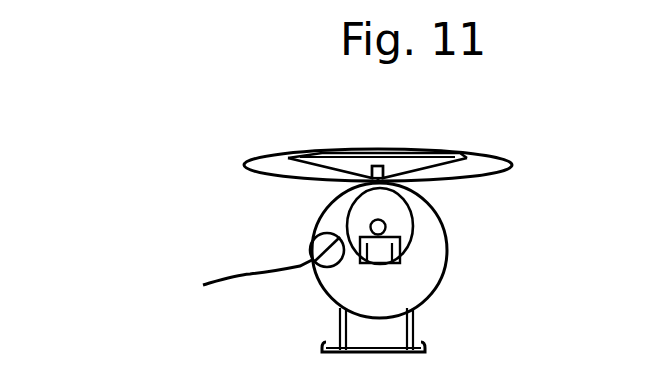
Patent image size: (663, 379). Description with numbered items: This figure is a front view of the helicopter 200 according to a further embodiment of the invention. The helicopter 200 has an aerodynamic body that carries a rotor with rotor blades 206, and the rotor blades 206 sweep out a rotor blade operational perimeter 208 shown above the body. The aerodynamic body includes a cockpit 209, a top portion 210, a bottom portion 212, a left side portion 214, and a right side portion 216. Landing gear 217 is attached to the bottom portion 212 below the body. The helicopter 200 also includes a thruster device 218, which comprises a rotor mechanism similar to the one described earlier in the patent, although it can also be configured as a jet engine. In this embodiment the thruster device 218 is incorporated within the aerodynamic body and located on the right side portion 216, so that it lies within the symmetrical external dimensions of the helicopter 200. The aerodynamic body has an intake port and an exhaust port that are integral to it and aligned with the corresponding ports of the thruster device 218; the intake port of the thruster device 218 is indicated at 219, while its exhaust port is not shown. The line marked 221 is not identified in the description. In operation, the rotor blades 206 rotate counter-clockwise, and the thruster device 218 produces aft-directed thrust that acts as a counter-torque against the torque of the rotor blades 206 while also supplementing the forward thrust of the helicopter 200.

The helicopter 200 is at (102, 150).
The rotor blades 206 is at (470, 166).
The rotor blade operational perimeter 208 is at (310, 182).
The cockpit 209 is at (412, 232).
The top portion 210 is at (428, 202).
The bottom portion 212 is at (340, 327).
The left side portion 214 is at (442, 282).
The right side portion 216 is at (318, 275).
The landing gear 217 is at (410, 330).
The thruster device 218 is at (320, 242).
The intake port of thruster device 219 is at (312, 256).
The tether line 221 is at (239, 281).